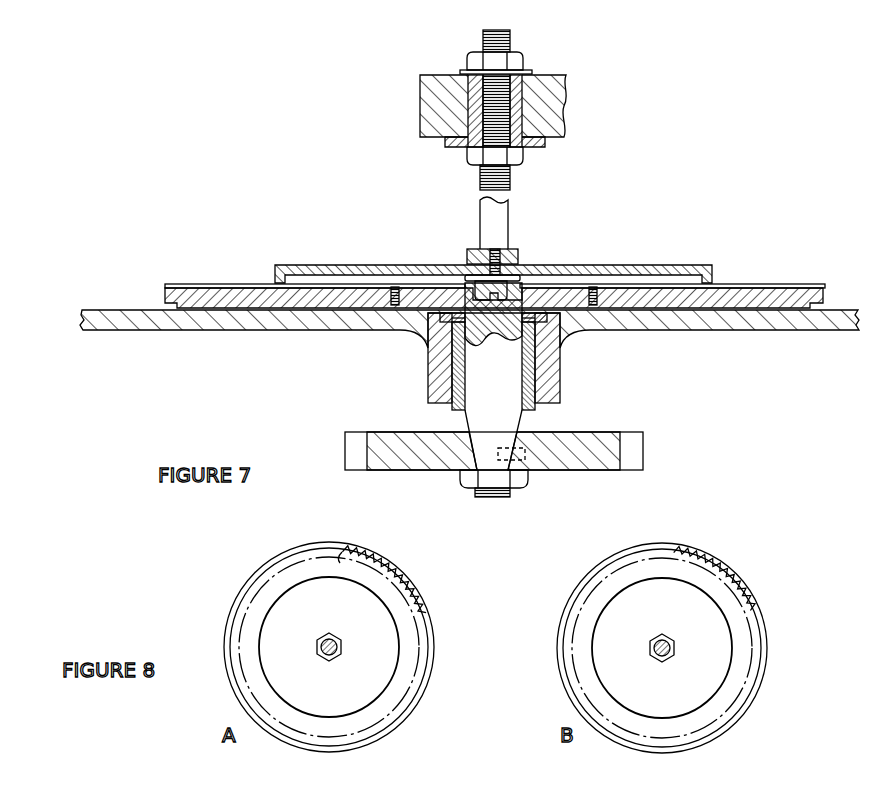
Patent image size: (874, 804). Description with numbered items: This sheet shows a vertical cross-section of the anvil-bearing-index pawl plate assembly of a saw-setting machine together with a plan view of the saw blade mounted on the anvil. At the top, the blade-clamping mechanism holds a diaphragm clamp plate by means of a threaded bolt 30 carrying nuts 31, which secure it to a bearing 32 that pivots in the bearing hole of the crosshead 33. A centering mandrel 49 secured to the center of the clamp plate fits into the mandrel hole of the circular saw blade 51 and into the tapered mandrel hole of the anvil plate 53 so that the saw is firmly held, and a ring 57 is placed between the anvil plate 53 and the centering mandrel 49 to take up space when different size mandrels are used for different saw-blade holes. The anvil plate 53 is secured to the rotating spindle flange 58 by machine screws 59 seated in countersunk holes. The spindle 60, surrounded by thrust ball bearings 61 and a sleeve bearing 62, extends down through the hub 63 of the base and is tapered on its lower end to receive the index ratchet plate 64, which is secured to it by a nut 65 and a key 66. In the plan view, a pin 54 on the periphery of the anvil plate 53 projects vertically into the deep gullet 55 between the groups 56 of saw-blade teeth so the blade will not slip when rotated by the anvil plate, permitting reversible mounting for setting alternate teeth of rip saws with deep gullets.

In FIG. 7, the threaded bolt 30 is at (510, 37).
In FIG. 7, the nuts 31 is at (517, 62).
In FIG. 7, the bearing 32 is at (445, 145).
In FIG. 7, the crosshead 33 is at (557, 107).
In FIG. 7, the centering mandrel 49 is at (500, 285).
In FIG. 7, the circular saw blade 51 is at (745, 287).
In FIG. 7, the anvil plate 53 is at (823, 300).
In FIG. 7, the pin 54 is at (189, 287).
In FIG. 8, the pin 54 is at (415, 617).
In FIG. 8, the deep gullet 55 is at (398, 581).
In FIG. 8, the groups of saw-blade teeth 56 is at (370, 553).
In FIG. 7, the ring 57 is at (470, 290).
In FIG. 7, the rotating spindle flange 58 is at (625, 311).
In FIG. 7, the machine screws 59 is at (393, 302).
In FIG. 7, the spindle 60 is at (513, 413).
In FIG. 7, the thrust ball bearings 61 is at (450, 318).
In FIG. 7, the sleeve bearing 62 is at (455, 405).
In FIG. 7, the hub 63 is at (430, 390).
In FIG. 7, the index ratchet plate 64 is at (607, 465).
In FIG. 7, the nut 65 is at (520, 486).
In FIG. 7, the key 66 is at (525, 460).